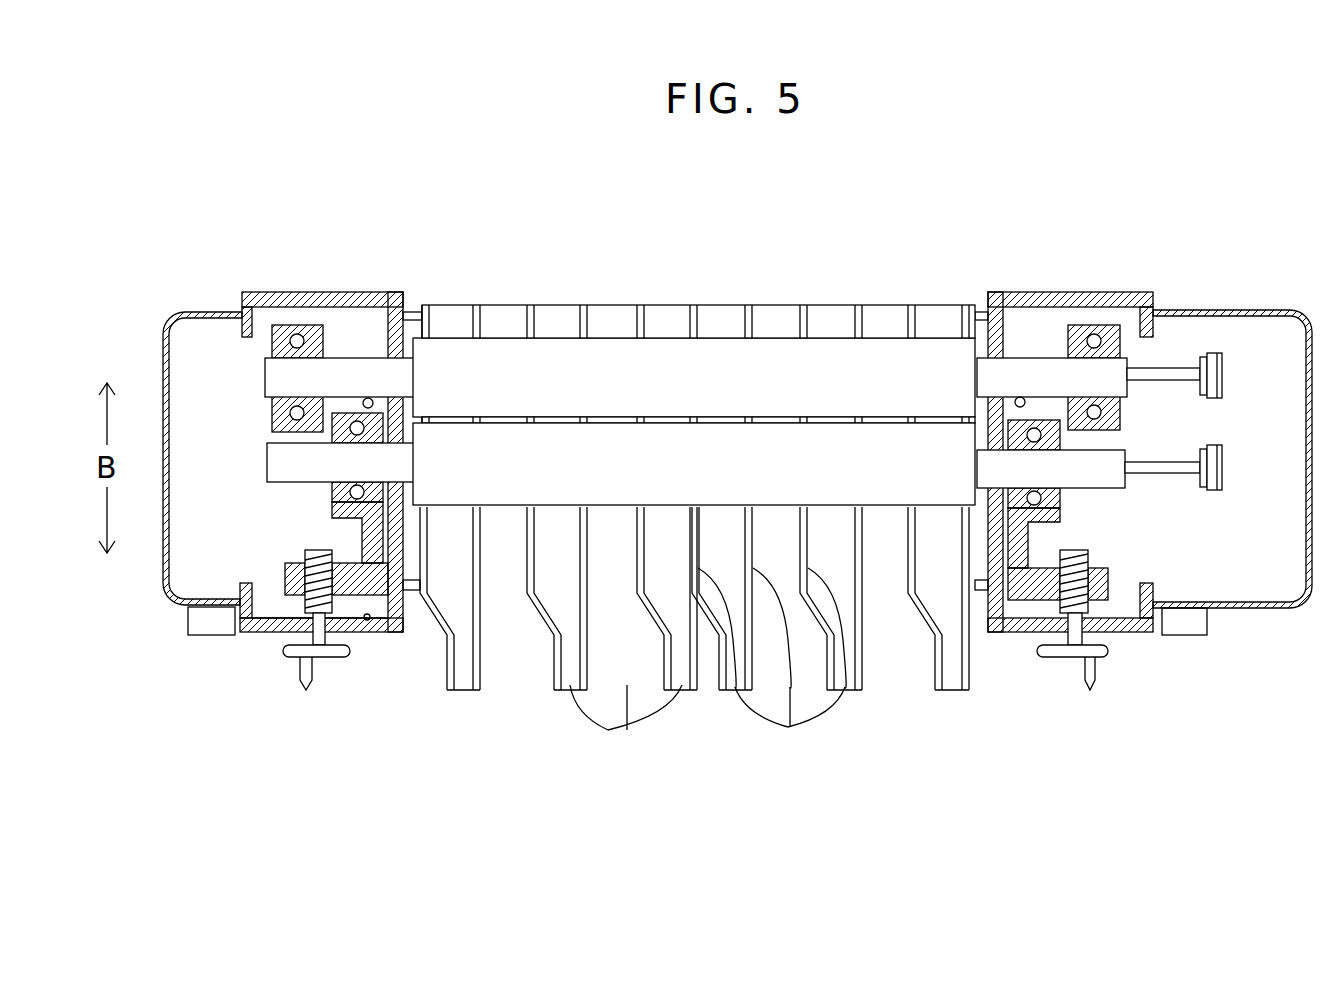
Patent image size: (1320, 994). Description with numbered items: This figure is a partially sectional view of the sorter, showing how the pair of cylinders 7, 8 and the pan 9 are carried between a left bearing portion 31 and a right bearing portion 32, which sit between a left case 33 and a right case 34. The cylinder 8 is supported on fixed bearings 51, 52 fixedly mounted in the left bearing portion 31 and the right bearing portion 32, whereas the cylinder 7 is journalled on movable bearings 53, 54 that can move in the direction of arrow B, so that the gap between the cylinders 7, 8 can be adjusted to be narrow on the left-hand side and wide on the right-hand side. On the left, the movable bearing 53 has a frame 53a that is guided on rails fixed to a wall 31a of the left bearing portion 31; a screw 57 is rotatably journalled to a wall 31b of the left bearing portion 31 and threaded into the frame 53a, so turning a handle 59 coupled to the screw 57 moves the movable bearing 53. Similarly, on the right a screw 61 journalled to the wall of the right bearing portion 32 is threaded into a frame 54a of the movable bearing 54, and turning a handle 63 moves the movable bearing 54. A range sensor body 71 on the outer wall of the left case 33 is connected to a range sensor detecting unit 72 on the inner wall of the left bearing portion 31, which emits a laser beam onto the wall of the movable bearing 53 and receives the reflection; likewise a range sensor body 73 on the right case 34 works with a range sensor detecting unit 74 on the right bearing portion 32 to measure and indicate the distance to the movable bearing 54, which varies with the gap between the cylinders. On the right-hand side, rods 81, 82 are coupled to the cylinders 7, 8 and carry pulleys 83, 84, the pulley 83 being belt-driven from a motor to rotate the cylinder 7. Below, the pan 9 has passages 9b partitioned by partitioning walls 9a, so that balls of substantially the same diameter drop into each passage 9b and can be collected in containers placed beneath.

The cylinder 7 is at (560, 508).
The cylinder 8 is at (600, 305).
The pan 9 is at (662, 305).
The partitioning walls 9a is at (772, 670).
The passages 9b is at (626, 729).
The left bearing portion 31 is at (325, 292).
The wall of the left bearing portion 31a is at (387, 632).
The wall of the left bearing portion 31b is at (368, 620).
The right bearing portion 32 is at (1037, 292).
The left case 33 is at (182, 312).
The right case 34 is at (1222, 310).
The fixed bearing 51 is at (278, 325).
The fixed bearing 52 is at (1093, 325).
The movable bearing 53 is at (332, 505).
The frame of the movable bearing 53a is at (362, 545).
The movable bearing 54 is at (1062, 512).
The frame of the movable bearing 54a is at (1028, 548).
The screw 57 is at (307, 602).
The handle 59 is at (343, 657).
The screw 61 is at (1128, 630).
The handle 63 is at (1053, 657).
The range sensor body 71 is at (205, 637).
The range sensor detecting unit 72 is at (380, 398).
The range sensor body 73 is at (1183, 637).
The range sensor detecting unit 74 is at (1012, 396).
The rod 81 is at (1160, 462).
The rod 82 is at (1160, 368).
The pulley 83 is at (1222, 473).
The pulley 84 is at (1222, 375).